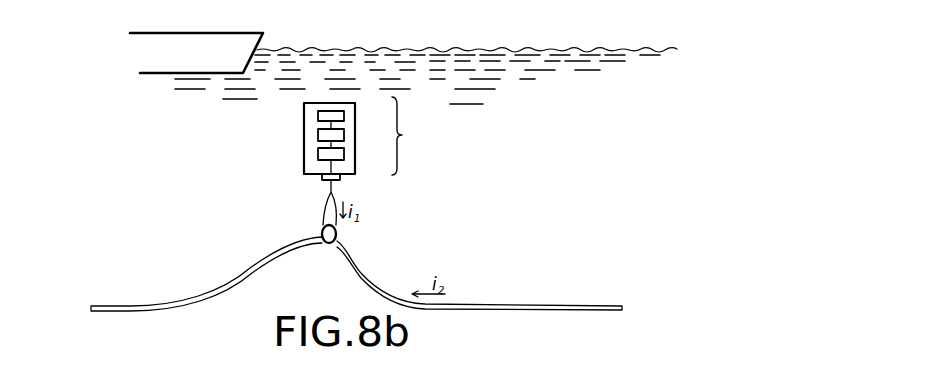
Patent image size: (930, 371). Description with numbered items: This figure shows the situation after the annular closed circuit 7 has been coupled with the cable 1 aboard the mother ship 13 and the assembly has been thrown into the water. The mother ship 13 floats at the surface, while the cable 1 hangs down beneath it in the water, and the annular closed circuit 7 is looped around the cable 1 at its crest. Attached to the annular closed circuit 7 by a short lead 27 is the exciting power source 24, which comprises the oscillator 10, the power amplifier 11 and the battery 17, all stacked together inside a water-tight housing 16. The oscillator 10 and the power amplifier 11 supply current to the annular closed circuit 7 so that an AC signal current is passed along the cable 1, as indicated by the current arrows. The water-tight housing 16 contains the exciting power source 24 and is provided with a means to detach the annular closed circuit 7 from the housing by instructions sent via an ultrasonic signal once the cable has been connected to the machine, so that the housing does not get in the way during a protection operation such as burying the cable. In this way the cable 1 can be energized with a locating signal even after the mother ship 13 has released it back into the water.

The cable 1 is at (563, 304).
The annular closed circuit 7 is at (334, 278).
The oscillator 10 is at (287, 148).
The power amplifier 11 is at (257, 171).
The mother ship 13 is at (231, 33).
The water-tight housing 16 is at (318, 116).
The battery 17 is at (344, 112).
The exciting power source 24 is at (430, 148).
The cable 27 is at (322, 179).